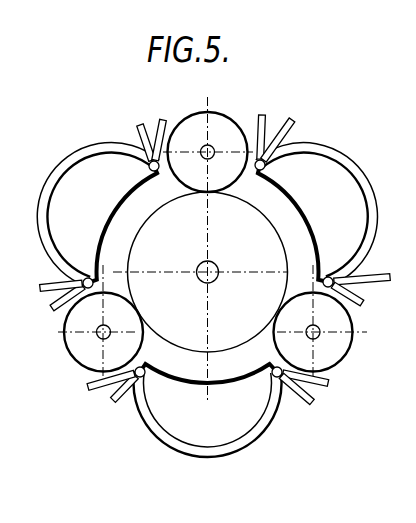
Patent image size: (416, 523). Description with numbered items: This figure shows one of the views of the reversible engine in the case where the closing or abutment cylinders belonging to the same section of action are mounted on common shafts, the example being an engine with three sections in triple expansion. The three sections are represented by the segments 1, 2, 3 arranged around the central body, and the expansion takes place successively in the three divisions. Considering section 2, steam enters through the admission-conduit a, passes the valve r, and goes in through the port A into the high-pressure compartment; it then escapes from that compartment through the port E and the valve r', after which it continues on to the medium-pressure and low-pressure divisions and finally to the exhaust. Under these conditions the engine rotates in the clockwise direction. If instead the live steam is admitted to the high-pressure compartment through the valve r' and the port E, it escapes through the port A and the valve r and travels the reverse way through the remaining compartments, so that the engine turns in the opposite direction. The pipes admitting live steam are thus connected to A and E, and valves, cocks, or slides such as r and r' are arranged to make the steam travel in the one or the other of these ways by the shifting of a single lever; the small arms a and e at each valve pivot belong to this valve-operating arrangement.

The section 1 is at (208, 371).
The section 2 is at (293, 223).
The section 3 is at (122, 224).
The admission-conduit a is at (224, 255).
The arm e is at (202, 258).
The valve r is at (192, 268).
The valve r' is at (342, 259).
The port A is at (258, 170).
The port E is at (317, 219).